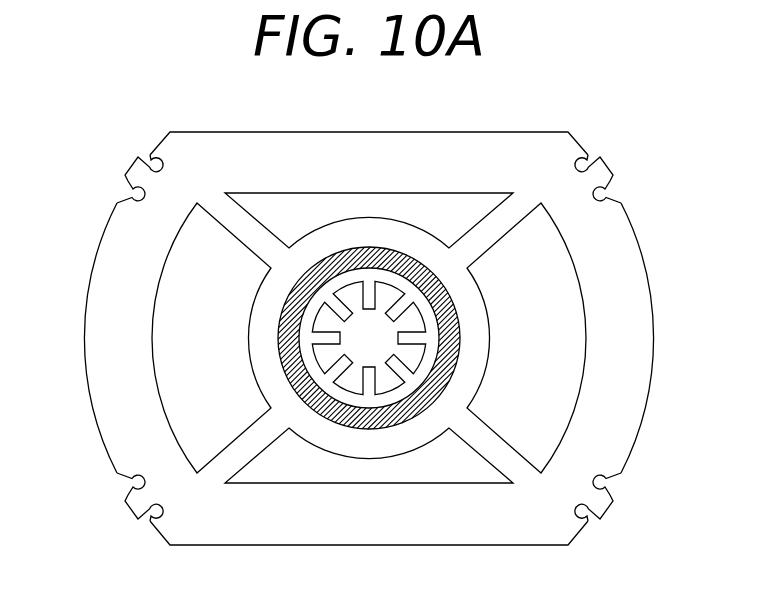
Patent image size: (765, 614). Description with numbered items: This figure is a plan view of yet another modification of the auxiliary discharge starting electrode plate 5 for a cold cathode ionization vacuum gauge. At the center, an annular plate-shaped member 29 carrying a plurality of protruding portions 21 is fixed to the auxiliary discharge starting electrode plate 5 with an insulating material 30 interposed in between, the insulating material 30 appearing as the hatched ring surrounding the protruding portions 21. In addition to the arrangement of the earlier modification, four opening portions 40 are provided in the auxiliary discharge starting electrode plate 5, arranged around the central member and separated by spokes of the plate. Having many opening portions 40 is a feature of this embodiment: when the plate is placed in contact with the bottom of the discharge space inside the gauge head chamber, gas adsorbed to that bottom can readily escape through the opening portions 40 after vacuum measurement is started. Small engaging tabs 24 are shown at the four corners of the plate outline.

The auxiliary discharge starting electrode plate 5 is at (654, 347).
The protruding portions 21 is at (418, 336).
The engaging hooks 24 is at (137, 158).
The annular plate-shaped member 29 is at (381, 404).
The insulating material 30 is at (448, 290).
The opening portions 40 is at (412, 207).